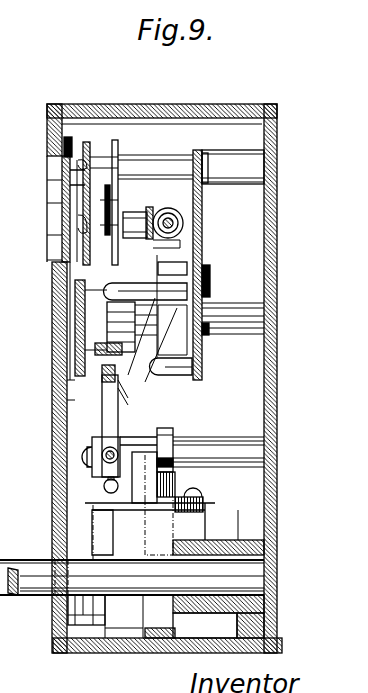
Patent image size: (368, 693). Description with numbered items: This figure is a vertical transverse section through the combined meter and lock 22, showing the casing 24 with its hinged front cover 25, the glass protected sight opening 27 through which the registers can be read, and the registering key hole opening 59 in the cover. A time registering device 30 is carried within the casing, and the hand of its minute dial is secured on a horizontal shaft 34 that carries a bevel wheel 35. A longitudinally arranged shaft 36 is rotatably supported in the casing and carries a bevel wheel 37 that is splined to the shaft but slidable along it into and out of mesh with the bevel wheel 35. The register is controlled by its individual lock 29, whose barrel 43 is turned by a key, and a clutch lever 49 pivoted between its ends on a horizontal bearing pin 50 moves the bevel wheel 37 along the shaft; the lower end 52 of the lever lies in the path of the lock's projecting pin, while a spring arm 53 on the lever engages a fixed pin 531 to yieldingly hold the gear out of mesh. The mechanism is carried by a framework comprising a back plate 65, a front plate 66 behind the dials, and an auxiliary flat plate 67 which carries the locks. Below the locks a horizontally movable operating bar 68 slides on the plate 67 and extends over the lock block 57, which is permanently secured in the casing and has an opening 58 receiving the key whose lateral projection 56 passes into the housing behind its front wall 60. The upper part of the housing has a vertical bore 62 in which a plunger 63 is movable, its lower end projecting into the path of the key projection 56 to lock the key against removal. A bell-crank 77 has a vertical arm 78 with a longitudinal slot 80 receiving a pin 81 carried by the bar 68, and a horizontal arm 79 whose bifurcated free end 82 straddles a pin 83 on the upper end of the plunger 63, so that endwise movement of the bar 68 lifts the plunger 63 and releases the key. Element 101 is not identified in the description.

The combined meter and lock 22 is at (282, 212).
The casing 24 is at (224, 92).
The hinged front cover 25 is at (56, 512).
The sight opening 27 is at (48, 209).
The individual lock 29 is at (66, 378).
The time registering device 30 is at (64, 166).
The horizontal shaft 34 is at (118, 218).
The bevel wheel 35 is at (165, 205).
The longitudinally arranged shaft 36 is at (177, 222).
The bevel wheel 37 is at (193, 158).
The lock barrel 43 is at (78, 300).
The clutch lever 49 is at (183, 246).
The bearing pin 50 is at (135, 282).
The lower end of clutch lever 52 is at (168, 375).
The spring arm 53 is at (210, 296).
The fixed pin 531 is at (206, 344).
The lateral projection 56 is at (137, 612).
The lock block 57 is at (92, 512).
The opening 58 is at (278, 542).
The key hole opening 59 is at (54, 622).
The front wall 60 is at (95, 537).
The vertical bore 62 is at (145, 540).
The plunger 63 is at (153, 452).
The back plate 65 is at (202, 210).
The front plate 66 is at (84, 189).
The auxiliary bar or flat plate 67 is at (66, 400).
The operating bar 68 is at (92, 380).
The bell-crank 77 is at (183, 428).
The vertical arm 78 is at (102, 430).
The horizontal arm 79 is at (218, 427).
The longitudinal slot 80 is at (122, 405).
The pin 81 is at (60, 368).
The bifurcated free end 82 is at (180, 480).
The pin 83 is at (185, 465).
The pad 101 is at (160, 640).